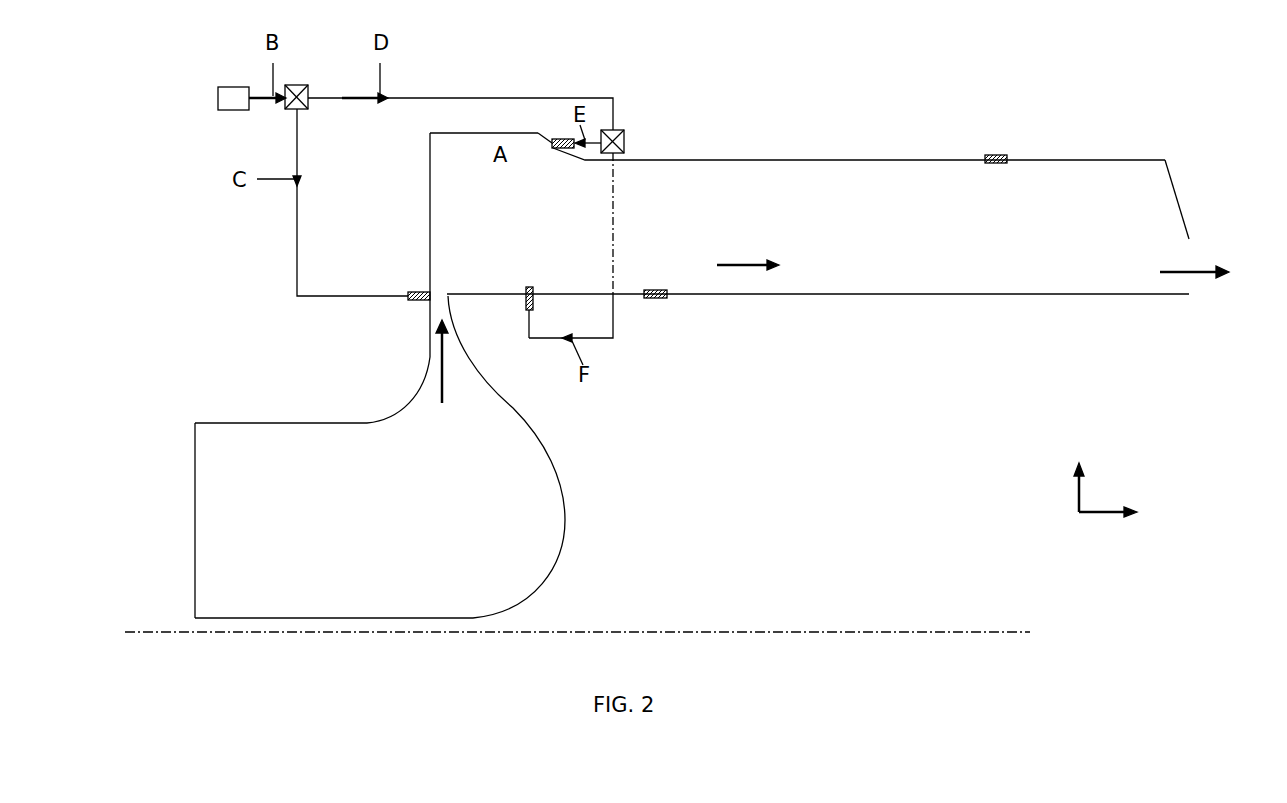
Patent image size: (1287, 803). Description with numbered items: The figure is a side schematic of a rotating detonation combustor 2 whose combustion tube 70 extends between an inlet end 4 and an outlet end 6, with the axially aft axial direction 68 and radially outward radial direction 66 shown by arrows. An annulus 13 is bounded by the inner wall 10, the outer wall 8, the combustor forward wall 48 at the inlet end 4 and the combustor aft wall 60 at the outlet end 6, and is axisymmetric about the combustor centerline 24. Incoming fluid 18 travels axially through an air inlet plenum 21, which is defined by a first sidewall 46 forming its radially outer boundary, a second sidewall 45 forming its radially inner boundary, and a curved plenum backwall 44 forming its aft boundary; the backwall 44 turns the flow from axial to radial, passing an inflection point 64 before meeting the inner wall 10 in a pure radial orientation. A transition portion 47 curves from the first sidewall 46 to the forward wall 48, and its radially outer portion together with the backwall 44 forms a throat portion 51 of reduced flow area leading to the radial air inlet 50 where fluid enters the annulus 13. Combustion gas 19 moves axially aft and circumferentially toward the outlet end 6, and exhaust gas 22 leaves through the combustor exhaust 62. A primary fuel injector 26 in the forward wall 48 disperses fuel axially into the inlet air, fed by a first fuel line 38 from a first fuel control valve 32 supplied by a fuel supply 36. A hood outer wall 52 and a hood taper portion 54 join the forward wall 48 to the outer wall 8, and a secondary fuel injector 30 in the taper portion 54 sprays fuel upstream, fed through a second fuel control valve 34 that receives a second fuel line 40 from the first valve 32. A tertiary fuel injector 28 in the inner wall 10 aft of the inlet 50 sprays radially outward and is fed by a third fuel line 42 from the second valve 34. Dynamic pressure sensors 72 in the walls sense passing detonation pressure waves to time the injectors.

The rotating detonation combustor 2 is at (143, 65).
The inlet end 4 is at (394, 197).
The outlet end 6 is at (1237, 219).
The outer wall 8 is at (785, 160).
The inner wall 10 is at (890, 294).
The annulus 13 is at (998, 225).
The incoming fluid 18 is at (440, 348).
The combustion gas 19 is at (735, 262).
The air inlet plenum 21 is at (269, 520).
The exhaust gas 22 is at (1193, 275).
The combustor centerline 24 is at (128, 631).
The primary fuel injector 26 is at (408, 300).
The tertiary fuel injector 28 is at (525, 301).
The secondary fuel injector 30 is at (564, 148).
The first fuel control valve 32 is at (285, 109).
The second fuel control valve 34 is at (625, 133).
The fuel supply 36 is at (228, 87).
The first fuel line 38 is at (297, 197).
The second fuel line 40 is at (435, 97).
The third fuel line 42 is at (613, 325).
The plenum backwall 44 is at (558, 472).
The second sidewall 45 is at (297, 618).
The first sidewall 46 is at (277, 423).
The transition portion 47 is at (395, 403).
The combustor forward wall 48 is at (430, 248).
The air inlet 50 is at (451, 280).
The throat portion 51 is at (488, 351).
The hood outer wall 52 is at (497, 133).
The hood taper portion 54 is at (546, 142).
The combustor aft wall 60 is at (1180, 193).
The combustor exhaust 62 is at (1152, 238).
The inflection point 64 is at (513, 409).
The radial direction 66 is at (1076, 494).
The axial direction 68 is at (1104, 516).
The combustion tube 70 is at (915, 128).
The dynamic pressure sensor 72 is at (997, 158).